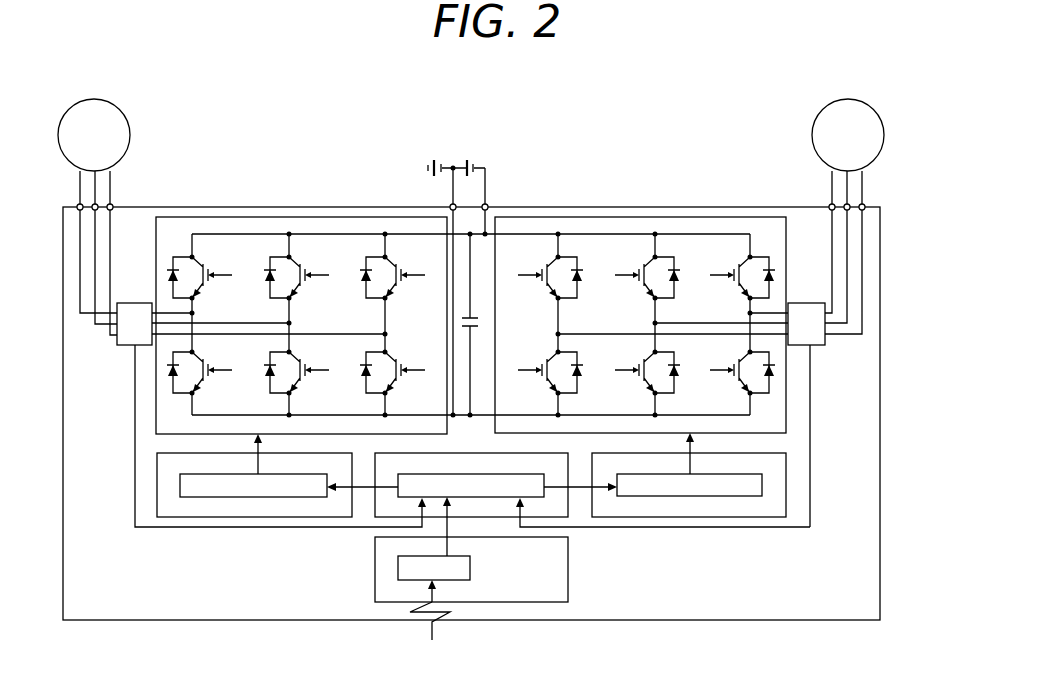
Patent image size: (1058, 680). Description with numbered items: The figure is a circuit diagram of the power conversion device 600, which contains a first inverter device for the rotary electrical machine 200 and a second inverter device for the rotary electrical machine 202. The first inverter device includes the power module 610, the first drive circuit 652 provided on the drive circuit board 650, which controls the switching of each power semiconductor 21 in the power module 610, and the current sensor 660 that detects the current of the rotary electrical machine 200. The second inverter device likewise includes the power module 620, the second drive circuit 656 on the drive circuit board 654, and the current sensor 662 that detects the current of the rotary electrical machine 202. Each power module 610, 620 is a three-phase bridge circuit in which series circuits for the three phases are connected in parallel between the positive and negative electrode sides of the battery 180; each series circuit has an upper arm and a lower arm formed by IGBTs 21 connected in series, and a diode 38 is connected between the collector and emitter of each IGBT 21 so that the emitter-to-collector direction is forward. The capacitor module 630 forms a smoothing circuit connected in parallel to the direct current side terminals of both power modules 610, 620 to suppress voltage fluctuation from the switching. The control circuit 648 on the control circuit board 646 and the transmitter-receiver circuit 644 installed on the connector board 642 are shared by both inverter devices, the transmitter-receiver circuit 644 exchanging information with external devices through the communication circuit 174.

The power semiconductor (IGBT) 21 is at (399, 267).
The diode 38 is at (365, 292).
The communication circuit 174 is at (431, 635).
The battery 180 is at (467, 164).
The rotary electrical machine 200 is at (131, 133).
The rotary electrical machine 202 is at (812, 135).
The power conversion device 600 is at (880, 240).
The power module 610 is at (329, 217).
The power module 620 is at (625, 217).
The capacitor module 630 is at (478, 312).
The connector board 642 is at (568, 572).
The transmitter-receiver circuit 644 is at (398, 570).
The control circuit board 646 is at (377, 508).
The control circuit 648 is at (474, 473).
The drive circuit board 650 is at (157, 490).
The first drive circuit 652 is at (257, 497).
The drive circuit board 654 is at (786, 487).
The second drive circuit 656 is at (692, 496).
The current sensor 660 is at (125, 345).
The current sensor 662 is at (823, 345).